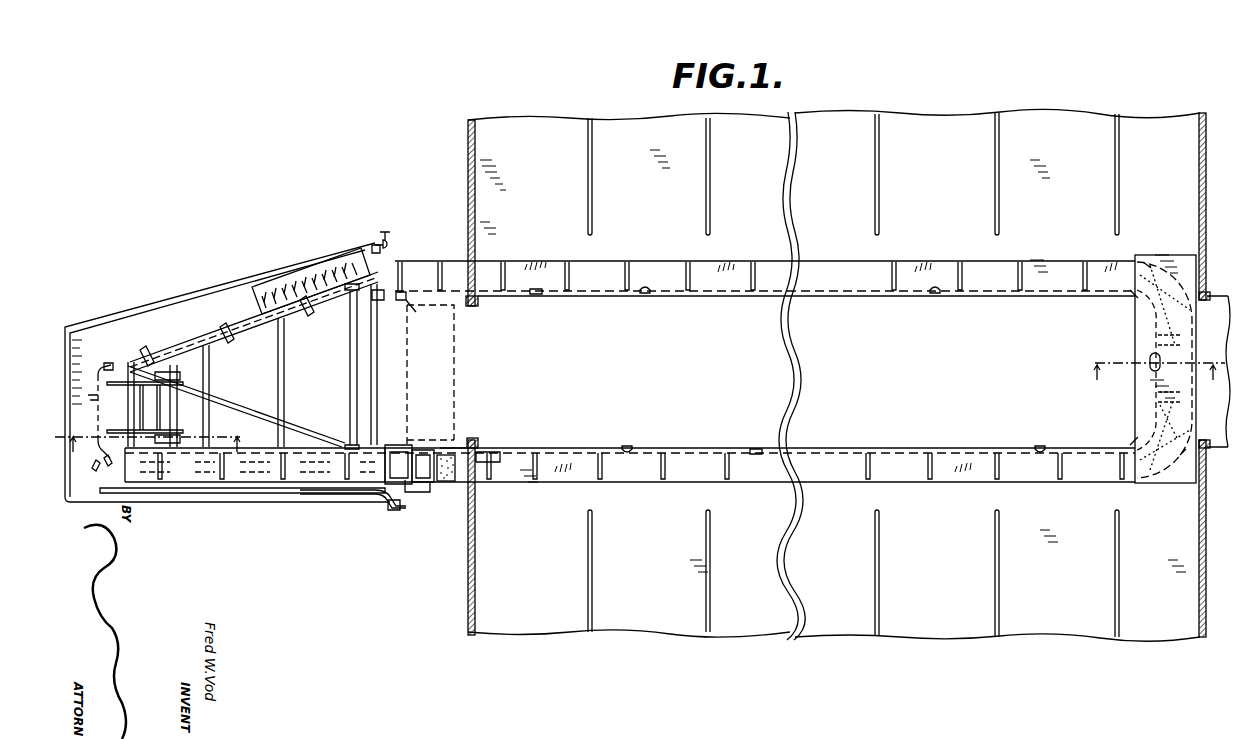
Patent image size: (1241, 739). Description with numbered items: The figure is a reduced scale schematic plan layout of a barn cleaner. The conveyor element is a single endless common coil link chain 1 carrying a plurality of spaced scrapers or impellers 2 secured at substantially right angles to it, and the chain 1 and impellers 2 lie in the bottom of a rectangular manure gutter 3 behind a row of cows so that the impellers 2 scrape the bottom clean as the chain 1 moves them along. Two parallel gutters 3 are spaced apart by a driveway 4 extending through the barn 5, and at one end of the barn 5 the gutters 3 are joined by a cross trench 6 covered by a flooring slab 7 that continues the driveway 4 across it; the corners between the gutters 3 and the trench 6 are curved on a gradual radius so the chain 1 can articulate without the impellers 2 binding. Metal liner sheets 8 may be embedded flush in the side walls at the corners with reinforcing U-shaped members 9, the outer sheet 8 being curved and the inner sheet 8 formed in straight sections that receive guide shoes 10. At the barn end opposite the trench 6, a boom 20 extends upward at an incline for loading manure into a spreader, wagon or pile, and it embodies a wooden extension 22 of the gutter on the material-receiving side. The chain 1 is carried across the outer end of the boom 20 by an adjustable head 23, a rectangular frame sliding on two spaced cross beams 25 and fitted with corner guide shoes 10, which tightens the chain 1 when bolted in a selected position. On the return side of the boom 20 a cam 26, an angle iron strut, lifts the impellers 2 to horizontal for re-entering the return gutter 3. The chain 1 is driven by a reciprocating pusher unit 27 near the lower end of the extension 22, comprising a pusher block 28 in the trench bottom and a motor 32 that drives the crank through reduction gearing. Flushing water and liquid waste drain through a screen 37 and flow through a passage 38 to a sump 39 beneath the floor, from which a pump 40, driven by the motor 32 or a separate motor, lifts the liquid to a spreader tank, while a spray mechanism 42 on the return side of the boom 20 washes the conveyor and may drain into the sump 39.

The endless common coil link chain 1 is at (1061, 284).
The scrapers or impellers 2 is at (624, 274).
The manure gutter 3 is at (663, 258).
The driveway 4 is at (920, 362).
The barn 5 is at (465, 180).
The cross trench 6 is at (1150, 332).
The flooring slab 7 is at (1167, 483).
The metal liner sheets 8 is at (1152, 260).
The reinforcing U-shaped members 9 is at (1151, 362).
The guide shoes 10 is at (538, 293).
The boom 20 is at (260, 346).
The wooden extension 22 is at (259, 486).
The adjustable head 23 is at (176, 408).
The cross beams 25 is at (156, 418).
The cam 26 is at (154, 340).
The reciprocating pusher unit 27 is at (422, 493).
The pusher block 28 is at (482, 460).
The motor 32 is at (393, 444).
The screen 37 is at (445, 487).
The passage 38 is at (462, 438).
The sump 39 is at (457, 366).
The pump 40 is at (392, 510).
The spray mechanism 42 is at (322, 270).